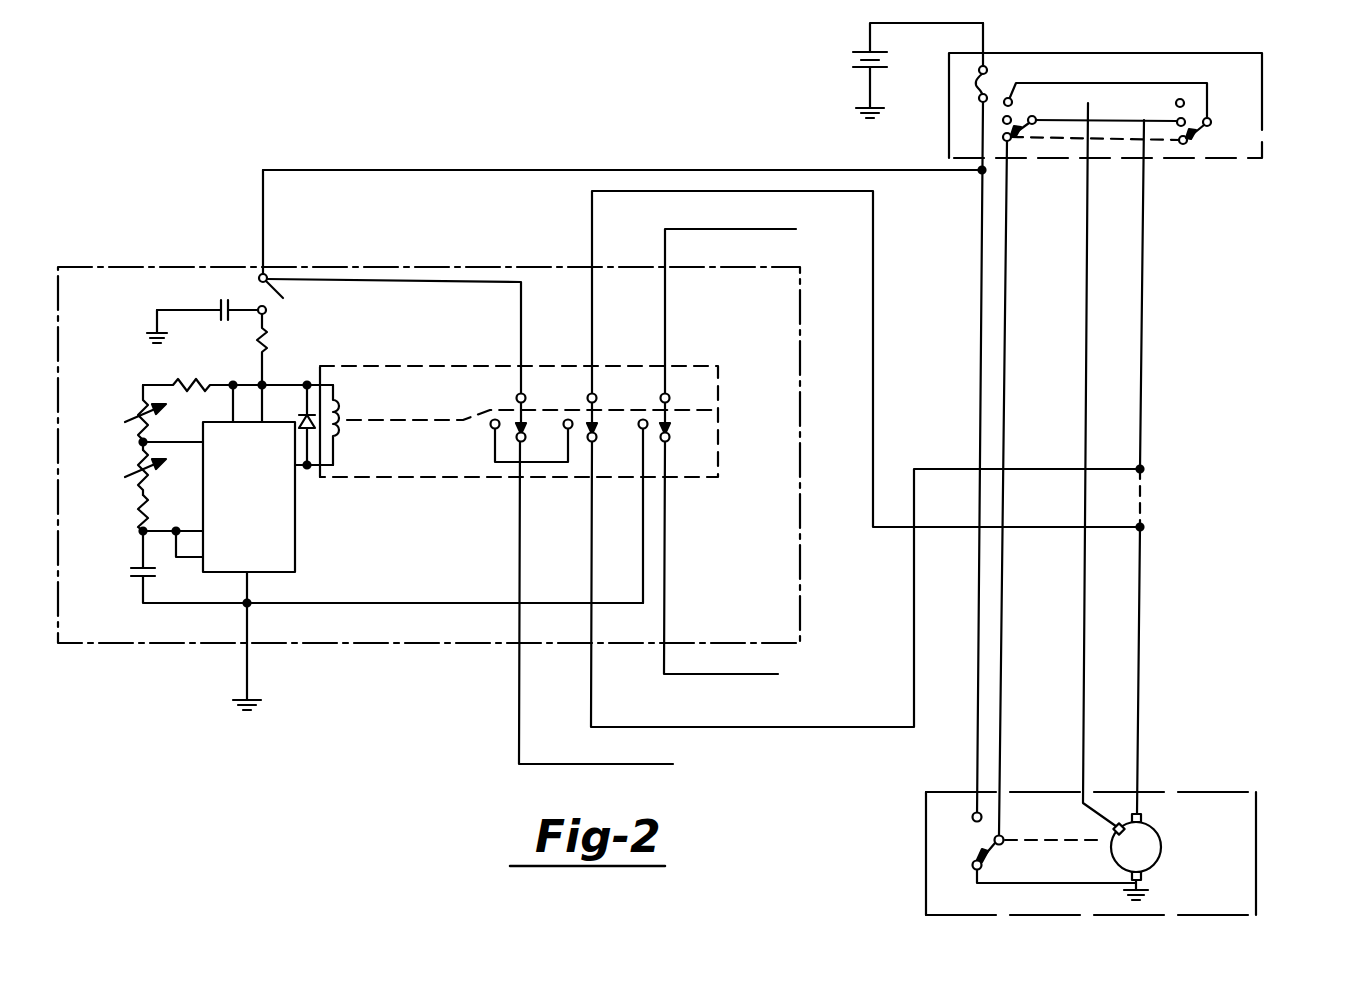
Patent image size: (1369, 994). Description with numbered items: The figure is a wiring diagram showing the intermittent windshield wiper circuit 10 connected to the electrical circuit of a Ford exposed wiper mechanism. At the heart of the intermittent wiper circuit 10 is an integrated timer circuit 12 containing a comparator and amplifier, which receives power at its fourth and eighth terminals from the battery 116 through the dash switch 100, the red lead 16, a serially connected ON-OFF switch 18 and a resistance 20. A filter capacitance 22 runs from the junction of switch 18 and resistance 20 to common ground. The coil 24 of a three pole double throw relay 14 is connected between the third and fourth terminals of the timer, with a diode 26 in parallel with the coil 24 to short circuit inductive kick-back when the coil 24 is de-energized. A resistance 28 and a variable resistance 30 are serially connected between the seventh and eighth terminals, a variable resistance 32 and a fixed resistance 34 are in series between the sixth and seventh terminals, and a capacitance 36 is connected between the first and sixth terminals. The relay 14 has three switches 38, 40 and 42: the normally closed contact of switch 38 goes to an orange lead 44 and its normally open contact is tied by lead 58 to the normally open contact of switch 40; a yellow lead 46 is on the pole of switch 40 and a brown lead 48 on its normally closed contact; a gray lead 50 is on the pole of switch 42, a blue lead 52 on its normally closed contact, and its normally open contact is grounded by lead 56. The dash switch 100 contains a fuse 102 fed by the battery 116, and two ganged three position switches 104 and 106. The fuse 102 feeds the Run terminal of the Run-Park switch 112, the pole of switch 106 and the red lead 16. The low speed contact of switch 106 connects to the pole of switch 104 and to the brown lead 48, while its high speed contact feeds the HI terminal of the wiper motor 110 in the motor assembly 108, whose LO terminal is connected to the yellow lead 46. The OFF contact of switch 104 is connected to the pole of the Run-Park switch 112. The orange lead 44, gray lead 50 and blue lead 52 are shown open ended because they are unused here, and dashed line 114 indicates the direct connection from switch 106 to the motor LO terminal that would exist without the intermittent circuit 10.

The intermittent windshield wiper circuit 10 is at (800, 632).
The integrated timer circuit 12 is at (296, 560).
The three pole double throw relay switch 14 is at (719, 456).
The red lead 16 is at (410, 175).
The ON-OFF switch 18 is at (270, 286).
The resistance 20 is at (266, 342).
The filter capacitance 22 is at (220, 300).
The coil 24 is at (340, 432).
The diode 26 is at (304, 412).
The resistance 28 is at (183, 385).
The variable resistance 30 is at (126, 421).
The variable resistance 32 is at (126, 477).
The fixed resistance 34 is at (140, 508).
The capacitance 36 is at (135, 580).
The switch 38 is at (516, 386).
The switch 40 is at (587, 386).
The switch 42 is at (658, 386).
The orange lead 44 is at (520, 560).
The yellow lead 46 is at (590, 238).
The brown lead 48 is at (590, 692).
The gray lead 50 is at (667, 258).
The blue lead 52 is at (665, 558).
The lead 56 is at (456, 603).
The lead 58 is at (550, 462).
The dash switch 100 is at (1265, 150).
The fuse 102 is at (976, 84).
The three position switch 104 is at (1024, 108).
The three position switch 106 is at (1205, 105).
The motor assembly 108 is at (1252, 768).
The wiper motor 110 is at (1160, 864).
The Run-Park switch 112 is at (997, 850).
The dashed line 114 is at (1146, 512).
The battery 116 is at (845, 67).